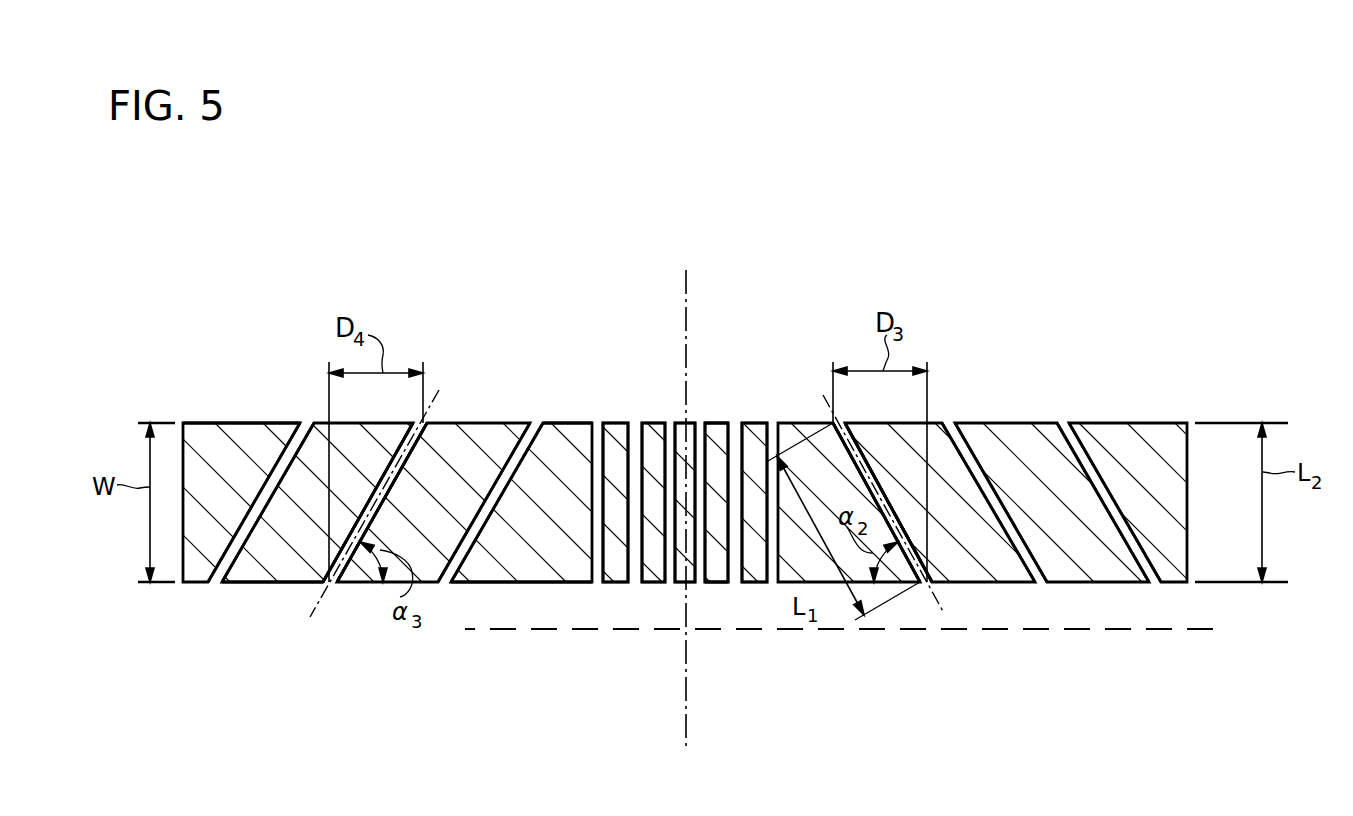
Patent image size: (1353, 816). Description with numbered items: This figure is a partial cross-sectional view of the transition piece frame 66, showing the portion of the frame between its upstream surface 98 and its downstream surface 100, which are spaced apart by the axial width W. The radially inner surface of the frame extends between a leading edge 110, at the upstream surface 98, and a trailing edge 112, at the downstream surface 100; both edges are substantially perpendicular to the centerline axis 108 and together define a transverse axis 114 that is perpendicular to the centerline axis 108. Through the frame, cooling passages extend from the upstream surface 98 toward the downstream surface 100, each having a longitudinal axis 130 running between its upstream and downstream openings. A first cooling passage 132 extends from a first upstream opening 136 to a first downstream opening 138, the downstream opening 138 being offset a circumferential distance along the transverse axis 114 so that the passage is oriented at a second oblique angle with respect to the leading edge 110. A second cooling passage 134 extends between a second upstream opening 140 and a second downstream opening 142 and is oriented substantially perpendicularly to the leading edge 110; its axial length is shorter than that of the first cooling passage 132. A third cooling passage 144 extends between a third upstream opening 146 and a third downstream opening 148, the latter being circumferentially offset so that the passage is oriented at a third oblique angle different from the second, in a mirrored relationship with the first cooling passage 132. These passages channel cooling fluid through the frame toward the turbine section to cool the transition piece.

The transition piece frame 66 is at (886, 247).
The upstream surface 98 is at (273, 583).
The downstream surface 100 is at (253, 423).
The centerline axis 108 is at (686, 272).
The leading edge 110 is at (563, 583).
The trailing edge 112 is at (583, 423).
The transverse axis 114 is at (1123, 630).
The longitudinal axis 130 is at (823, 395).
The first cooling passage 132 is at (972, 360).
The second cooling passage 134 is at (721, 386).
The first upstream opening 136 is at (932, 582).
The first downstream opening 138 is at (840, 424).
The second upstream opening 140 is at (703, 582).
The second downstream opening 142 is at (703, 424).
The third cooling passage 144 is at (447, 312).
The third upstream opening 146 is at (325, 598).
The third downstream opening 148 is at (437, 413).